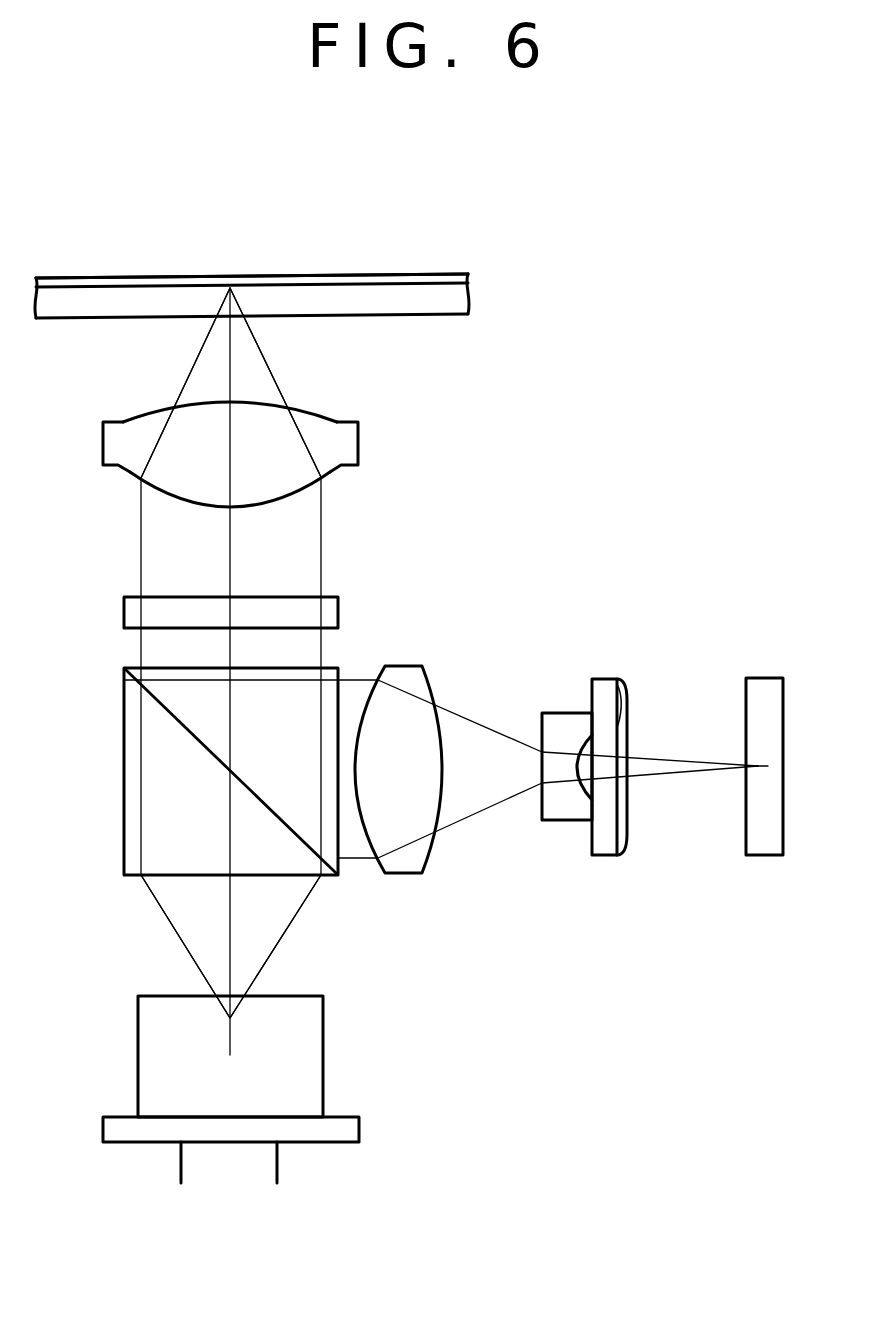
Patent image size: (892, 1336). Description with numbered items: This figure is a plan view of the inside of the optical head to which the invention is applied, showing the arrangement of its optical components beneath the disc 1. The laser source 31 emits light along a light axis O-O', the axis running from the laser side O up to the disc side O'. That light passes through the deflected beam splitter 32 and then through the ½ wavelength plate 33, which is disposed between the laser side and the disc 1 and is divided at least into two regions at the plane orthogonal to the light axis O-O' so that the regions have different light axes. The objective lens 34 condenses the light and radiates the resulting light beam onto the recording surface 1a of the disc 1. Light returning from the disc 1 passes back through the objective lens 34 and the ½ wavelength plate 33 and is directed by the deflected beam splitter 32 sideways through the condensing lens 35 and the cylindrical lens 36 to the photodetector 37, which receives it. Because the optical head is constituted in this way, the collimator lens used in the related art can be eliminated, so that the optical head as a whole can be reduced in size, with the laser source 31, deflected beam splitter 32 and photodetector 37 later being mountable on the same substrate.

The disc 1 is at (386, 200).
The recording surface 1a is at (438, 273).
The laser source 31 is at (323, 1065).
The deflected beam splitter 32 is at (123, 774).
The ½ wavelength plate 33 is at (344, 612).
The objective lens 34 is at (358, 446).
The condensing lens 35 is at (417, 666).
The cylindrical lens 36 is at (603, 678).
The photodetector 37 is at (760, 678).
The light axis O is at (231, 946).
The light axis O' is at (240, 383).